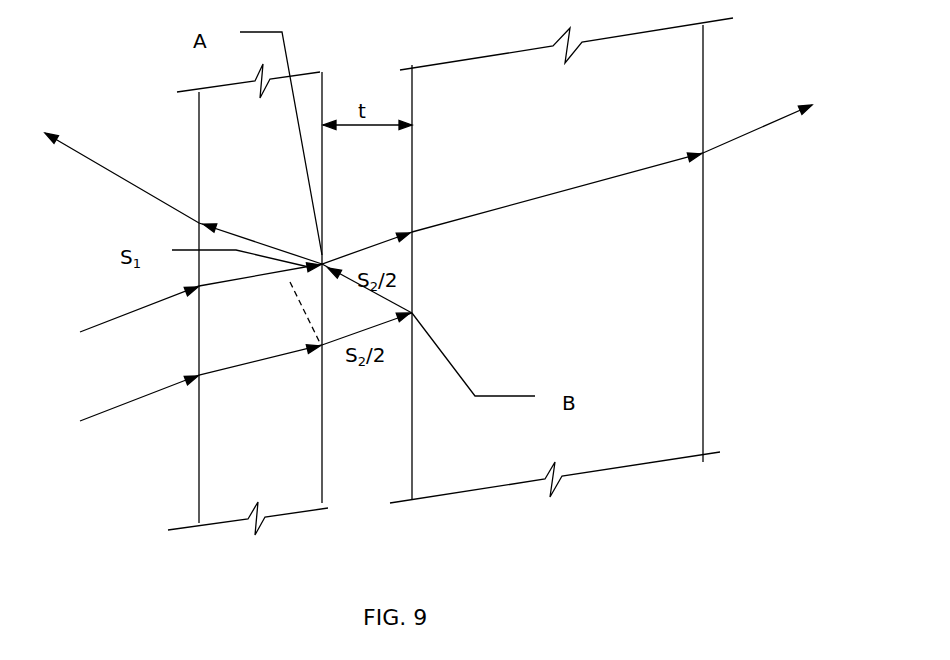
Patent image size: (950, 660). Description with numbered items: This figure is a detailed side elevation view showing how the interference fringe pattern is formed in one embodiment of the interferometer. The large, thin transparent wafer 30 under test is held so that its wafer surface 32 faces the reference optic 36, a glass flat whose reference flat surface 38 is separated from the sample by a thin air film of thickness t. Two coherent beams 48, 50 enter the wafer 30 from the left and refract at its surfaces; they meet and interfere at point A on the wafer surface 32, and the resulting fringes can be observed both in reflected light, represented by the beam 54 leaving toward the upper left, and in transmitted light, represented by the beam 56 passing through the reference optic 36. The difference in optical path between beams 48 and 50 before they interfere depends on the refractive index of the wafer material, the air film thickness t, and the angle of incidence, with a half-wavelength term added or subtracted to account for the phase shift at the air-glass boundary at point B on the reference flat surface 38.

The large, thin transparent wafer 30 is at (180, 304).
The wafer surface 32 is at (247, 331).
The reference optic 36 is at (610, 260).
The reference flat surface 38 is at (567, 338).
The beam 48 is at (218, 390).
The beam 50 is at (218, 282).
The reflected light beam 54 is at (173, 180).
The transmitted light beam 56 is at (653, 141).